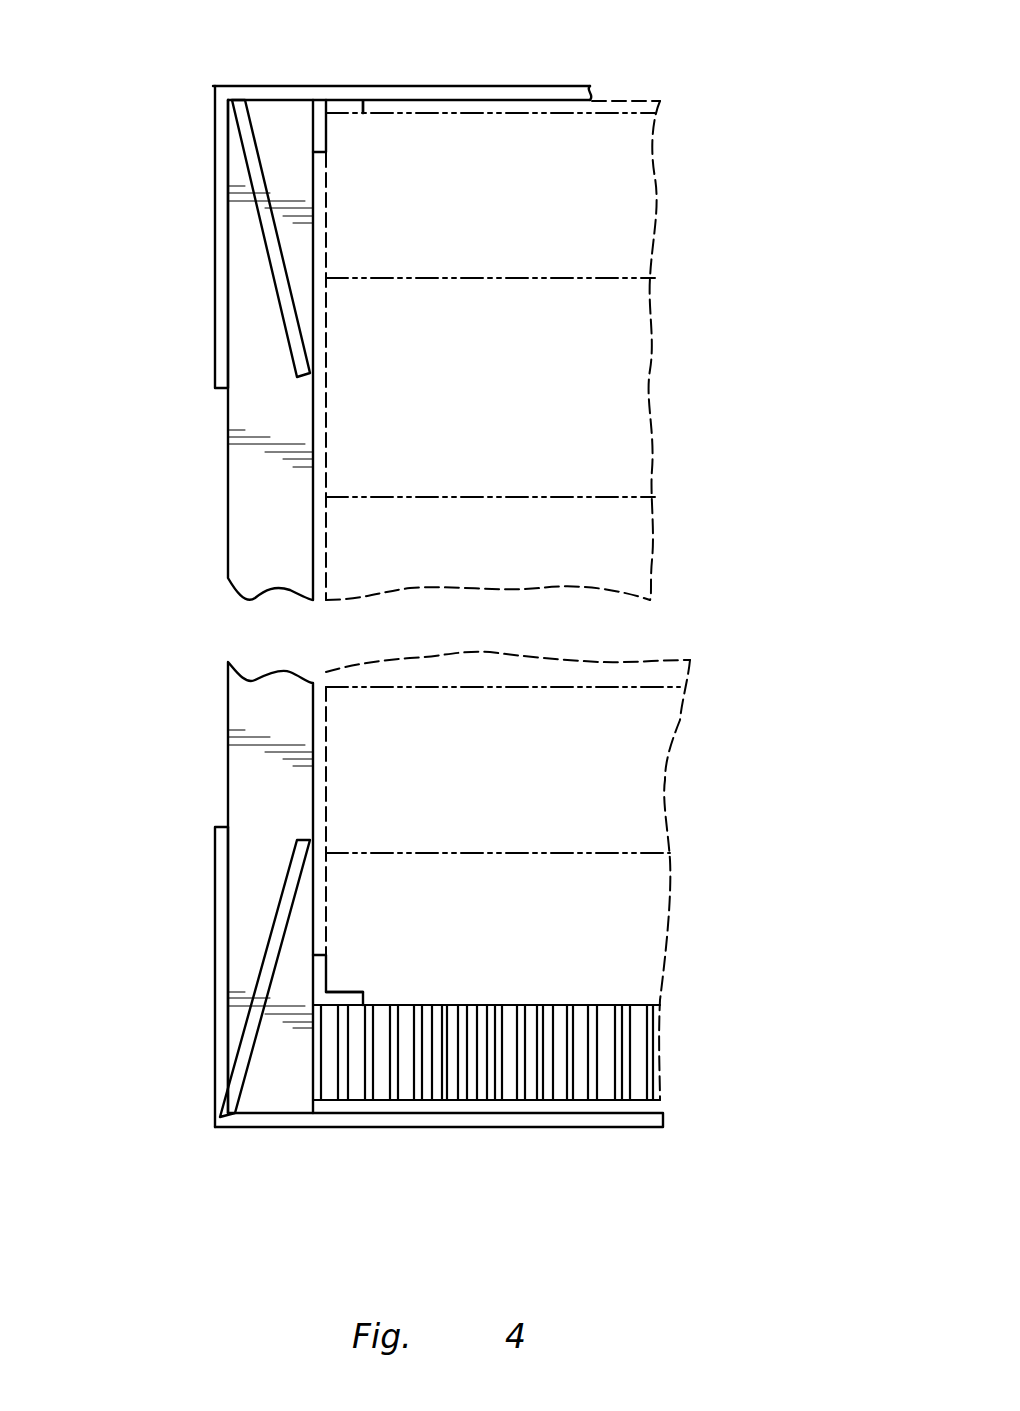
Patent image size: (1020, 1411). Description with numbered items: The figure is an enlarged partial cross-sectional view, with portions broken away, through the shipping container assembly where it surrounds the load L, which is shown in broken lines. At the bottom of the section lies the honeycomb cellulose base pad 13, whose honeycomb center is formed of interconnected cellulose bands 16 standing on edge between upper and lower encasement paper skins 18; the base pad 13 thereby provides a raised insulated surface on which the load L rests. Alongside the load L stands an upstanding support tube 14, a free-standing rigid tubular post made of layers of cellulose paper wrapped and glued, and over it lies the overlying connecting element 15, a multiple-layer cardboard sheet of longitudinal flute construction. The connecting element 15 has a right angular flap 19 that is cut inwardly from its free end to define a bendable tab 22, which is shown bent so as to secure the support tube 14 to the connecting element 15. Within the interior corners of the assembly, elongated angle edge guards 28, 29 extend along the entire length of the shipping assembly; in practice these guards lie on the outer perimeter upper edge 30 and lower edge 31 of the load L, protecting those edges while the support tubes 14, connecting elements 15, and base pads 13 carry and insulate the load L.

The honeycomb cellulose base pad 13 is at (584, 1004).
The upstanding support tube 14 is at (270, 787).
The overlying connecting element 15 is at (543, 95).
The interconnected cellulose bands 16 is at (503, 1063).
The encasement paper skin 18 is at (503, 1005).
The right angular flap 19 is at (221, 237).
The bendable tab 22 is at (285, 303).
The elongated angle edge guard 28 is at (318, 128).
The elongated angle edge guard 29 is at (328, 967).
The upper edge of the load 30 is at (345, 113).
The lower edge of the load 31 is at (381, 995).
The load L is at (586, 218).